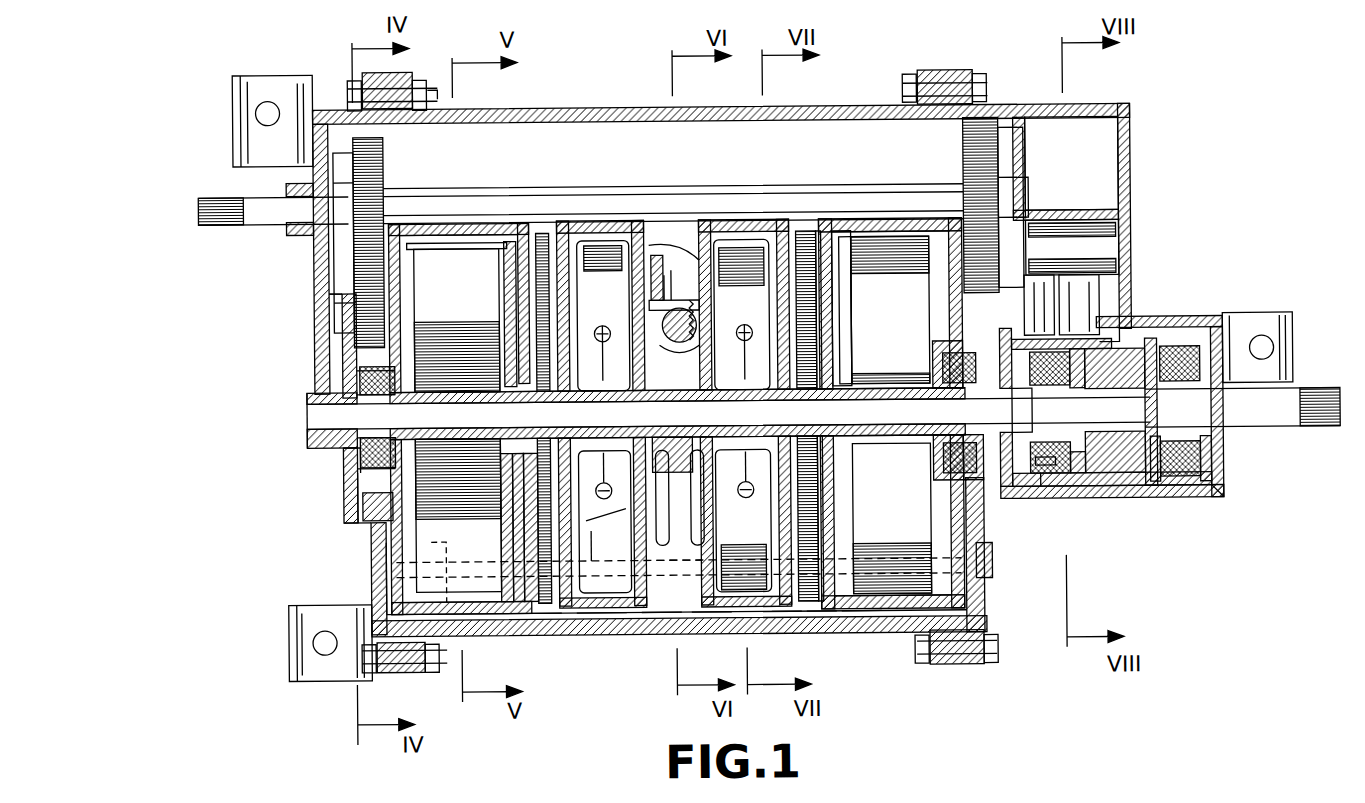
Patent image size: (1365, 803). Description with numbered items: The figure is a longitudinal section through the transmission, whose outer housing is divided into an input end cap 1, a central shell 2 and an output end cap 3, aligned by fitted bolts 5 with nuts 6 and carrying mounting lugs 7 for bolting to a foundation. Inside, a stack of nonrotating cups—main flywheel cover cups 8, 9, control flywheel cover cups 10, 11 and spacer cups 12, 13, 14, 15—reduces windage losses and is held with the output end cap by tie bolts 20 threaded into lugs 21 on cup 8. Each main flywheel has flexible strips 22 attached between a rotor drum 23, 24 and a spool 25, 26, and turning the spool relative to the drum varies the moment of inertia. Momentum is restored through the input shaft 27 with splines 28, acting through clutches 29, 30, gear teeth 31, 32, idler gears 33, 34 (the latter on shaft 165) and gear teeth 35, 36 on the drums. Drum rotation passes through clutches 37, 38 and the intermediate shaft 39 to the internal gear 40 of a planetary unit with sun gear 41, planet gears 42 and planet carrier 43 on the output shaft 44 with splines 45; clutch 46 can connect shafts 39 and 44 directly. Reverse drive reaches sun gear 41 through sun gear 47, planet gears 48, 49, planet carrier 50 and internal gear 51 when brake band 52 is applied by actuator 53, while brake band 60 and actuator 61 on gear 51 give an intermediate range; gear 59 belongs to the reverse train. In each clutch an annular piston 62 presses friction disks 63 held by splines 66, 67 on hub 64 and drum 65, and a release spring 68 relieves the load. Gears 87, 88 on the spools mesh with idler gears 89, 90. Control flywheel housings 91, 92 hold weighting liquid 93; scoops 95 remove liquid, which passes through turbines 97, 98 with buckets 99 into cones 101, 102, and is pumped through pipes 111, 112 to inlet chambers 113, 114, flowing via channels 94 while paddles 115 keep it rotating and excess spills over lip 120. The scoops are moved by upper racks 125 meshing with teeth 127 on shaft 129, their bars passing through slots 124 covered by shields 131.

The input end cap 1 is at (370, 578).
The central shell 2 is at (512, 620).
The output end cap 3 is at (983, 610).
The fitted bolts 5 is at (350, 84).
The nuts 6 is at (428, 78).
The mounting lugs 7 is at (262, 72).
The main flywheel cover cup 8 is at (500, 620).
The main flywheel cover cup 9 is at (856, 620).
The control flywheel cover cup 10 is at (604, 620).
The control flywheel cover cup 11 is at (780, 620).
The spacer cup 12 is at (546, 620).
The spacer cup 13 is at (816, 620).
The spacer cup 14 is at (655, 620).
The spacer cup 15 is at (705, 620).
The tie bolts 20 is at (992, 560).
The lugs on cup 8 21 is at (440, 545).
The flexible strip flyweight 22 is at (478, 320).
The main flywheel rotor drum 23 is at (465, 245).
The main flywheel rotor drum 24 is at (598, 325).
The main flywheel spool 25 is at (522, 505).
The main flywheel spool 26 is at (880, 440).
The input shaft 27 is at (248, 221).
The splines 28 is at (218, 221).
The clutch 29 is at (338, 278).
The clutch 30 is at (1005, 120).
The gear teeth 31 is at (382, 130).
The gear teeth 32 is at (962, 130).
The idler gear 33 is at (343, 300).
The idler gear 34 is at (950, 345).
The gear teeth 35 is at (343, 505).
The gear teeth 36 is at (960, 482).
The clutch 37 is at (345, 462).
The clutch 38 is at (950, 470).
The intermediate shaft 39 is at (868, 390).
The internal gear 40 is at (1120, 490).
The sun gear 41 is at (1120, 476).
The planet gears 42 is at (1150, 335).
The planet carrier 43 is at (1200, 495).
The output shaft 44 is at (1282, 431).
The splines 45 is at (1325, 431).
The clutch 46 is at (1222, 490).
The sun gear 47 is at (1040, 476).
The planet gear 48 is at (1079, 305).
The planet gear 49 is at (1036, 305).
The planet carrier 50 is at (1005, 480).
The internal gear 51 is at (1046, 470).
The brake band 52 is at (1048, 490).
The actuator 53 is at (1060, 278).
The gear 59 is at (1090, 476).
The brake band 60 is at (1076, 477).
The actuator 61 is at (1130, 318).
The annular piston 62 is at (372, 540).
The friction disks 63 is at (368, 384).
The clutch hub 64 is at (365, 462).
The clutch drum 65 is at (365, 518).
The splines 66 is at (312, 402).
The splines 67 is at (365, 376).
The clutch release spring 68 is at (365, 450).
The gear 87 is at (543, 470).
The gear 88 is at (805, 470).
The idler gear 89 is at (520, 270).
The idler gear 90 is at (842, 330).
The liquid support housing 91 is at (580, 235).
The liquid support housing 92 is at (748, 240).
The liquid 93 is at (600, 238).
The channels 94 is at (617, 353).
The scoops 95 is at (675, 266).
The hydraulic turbine 97 is at (614, 474).
The hydraulic turbine 98 is at (728, 465).
The turbine buckets 99 is at (676, 493).
The cone 101 is at (605, 520).
The cone 102 is at (802, 416).
The pipe 111 is at (675, 500).
The pipe 112 is at (680, 572).
The inlet chamber 113 is at (674, 345).
The inlet chamber 114 is at (730, 352).
The paddles 115 is at (604, 544).
The lip 120 is at (709, 520).
The slots 124 is at (848, 353).
The upper racks 125 is at (671, 277).
The gear teeth 127 is at (672, 351).
The shaft 129 is at (673, 307).
The streamlined shields 131 is at (682, 300).
The shaft 165 is at (975, 358).